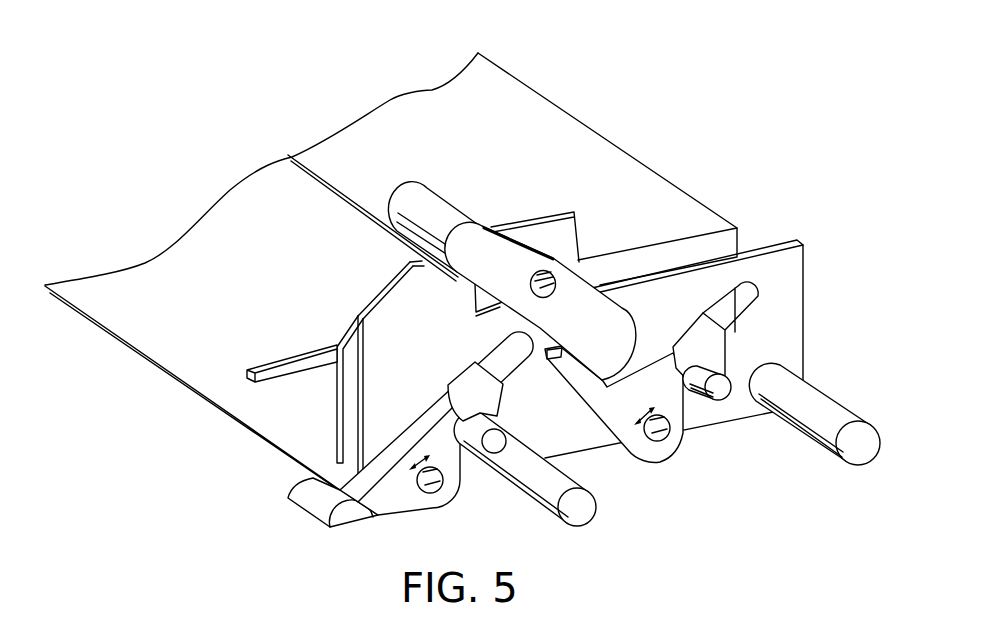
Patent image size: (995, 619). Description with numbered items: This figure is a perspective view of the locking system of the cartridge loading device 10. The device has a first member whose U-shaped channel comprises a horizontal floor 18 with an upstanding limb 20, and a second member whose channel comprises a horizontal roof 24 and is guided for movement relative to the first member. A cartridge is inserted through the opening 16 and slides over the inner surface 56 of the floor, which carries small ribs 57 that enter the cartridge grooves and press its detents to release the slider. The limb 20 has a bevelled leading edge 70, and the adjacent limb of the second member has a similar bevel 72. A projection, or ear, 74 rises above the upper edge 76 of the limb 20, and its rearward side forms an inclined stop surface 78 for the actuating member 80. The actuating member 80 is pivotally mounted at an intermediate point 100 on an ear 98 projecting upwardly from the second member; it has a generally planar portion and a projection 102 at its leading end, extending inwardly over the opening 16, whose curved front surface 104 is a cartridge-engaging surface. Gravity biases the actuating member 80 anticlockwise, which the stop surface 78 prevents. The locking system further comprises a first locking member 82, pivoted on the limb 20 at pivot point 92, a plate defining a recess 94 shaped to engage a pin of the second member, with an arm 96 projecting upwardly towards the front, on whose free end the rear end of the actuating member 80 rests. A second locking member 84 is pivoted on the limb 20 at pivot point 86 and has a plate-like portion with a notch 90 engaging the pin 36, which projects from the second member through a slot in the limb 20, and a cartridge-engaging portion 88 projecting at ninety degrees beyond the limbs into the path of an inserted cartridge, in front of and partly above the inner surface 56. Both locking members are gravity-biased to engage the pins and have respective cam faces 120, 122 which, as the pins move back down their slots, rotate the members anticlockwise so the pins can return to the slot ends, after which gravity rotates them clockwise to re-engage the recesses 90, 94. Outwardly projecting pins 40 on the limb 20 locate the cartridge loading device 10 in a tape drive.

The cartridge loading device 10 is at (524, 56).
The opening 16 is at (115, 325).
The base or floor portion 18 is at (243, 425).
The limb 20 is at (700, 331).
The upper or roof portion 24 is at (558, 117).
The pin 36 is at (495, 453).
The pin 40 is at (582, 517).
The inner surface of the floor 56 is at (83, 282).
The ribs 57 is at (275, 367).
The bevelled leading edge 70 is at (365, 379).
The bevel 72 is at (337, 343).
The projection or ear 74 is at (378, 287).
The upper edge 76 is at (794, 242).
The inclined stop surface 78 is at (441, 268).
The actuating member 80 is at (540, 301).
The first locking member 82 is at (650, 470).
The second locking member 84 is at (429, 517).
The pivot point 86 is at (437, 493).
The cartridge-engaging portion 88 is at (355, 517).
The notch or recess 90 is at (451, 397).
The pivot point 92 is at (662, 439).
The recess or notch 94 is at (672, 352).
The arm 96 is at (603, 407).
The ear 98 is at (553, 223).
The pivot mounting 100 is at (558, 272).
The projection 102 is at (421, 208).
The front surface 104 is at (411, 206).
The cam face 120 is at (728, 360).
The cam face 122 is at (503, 403).